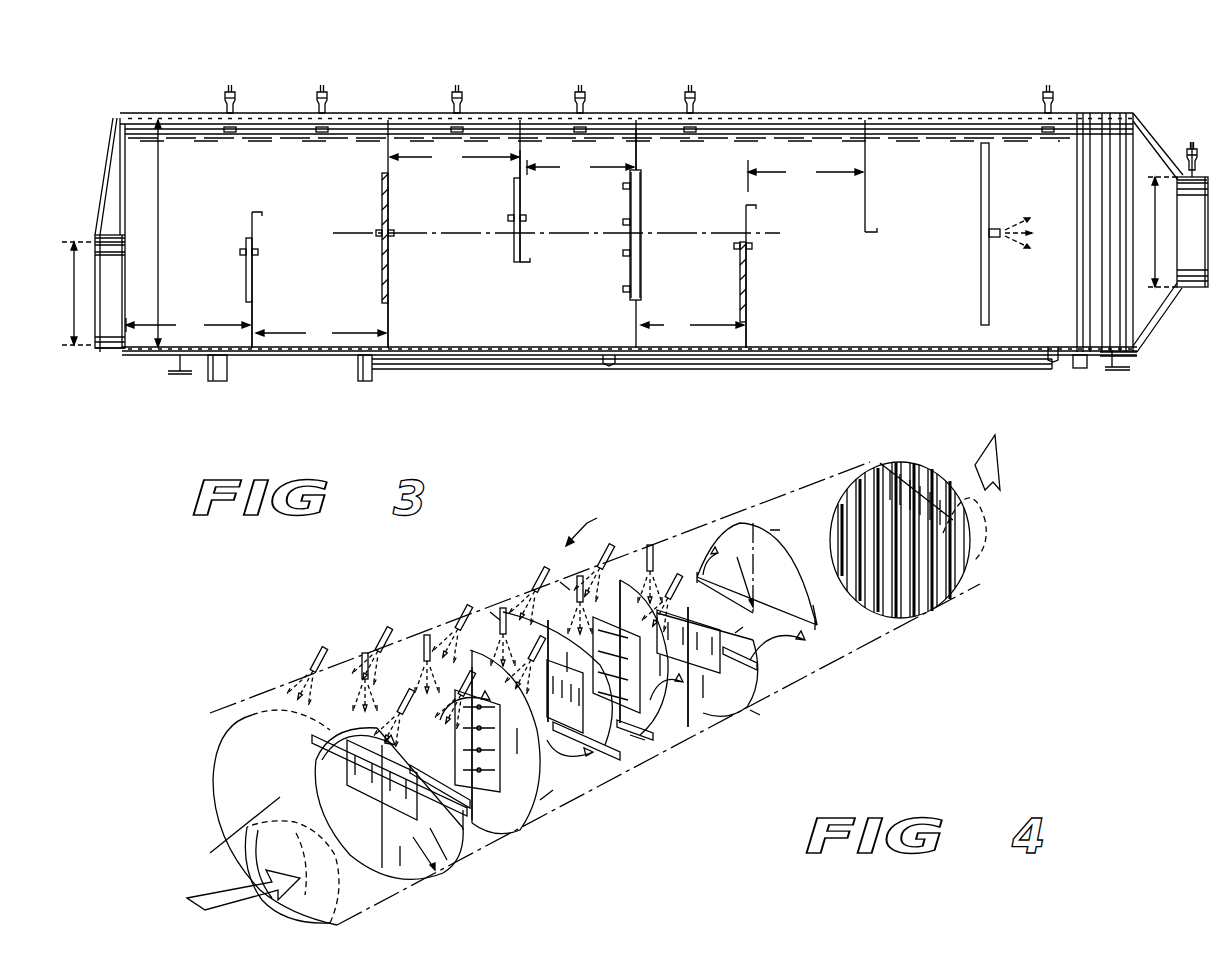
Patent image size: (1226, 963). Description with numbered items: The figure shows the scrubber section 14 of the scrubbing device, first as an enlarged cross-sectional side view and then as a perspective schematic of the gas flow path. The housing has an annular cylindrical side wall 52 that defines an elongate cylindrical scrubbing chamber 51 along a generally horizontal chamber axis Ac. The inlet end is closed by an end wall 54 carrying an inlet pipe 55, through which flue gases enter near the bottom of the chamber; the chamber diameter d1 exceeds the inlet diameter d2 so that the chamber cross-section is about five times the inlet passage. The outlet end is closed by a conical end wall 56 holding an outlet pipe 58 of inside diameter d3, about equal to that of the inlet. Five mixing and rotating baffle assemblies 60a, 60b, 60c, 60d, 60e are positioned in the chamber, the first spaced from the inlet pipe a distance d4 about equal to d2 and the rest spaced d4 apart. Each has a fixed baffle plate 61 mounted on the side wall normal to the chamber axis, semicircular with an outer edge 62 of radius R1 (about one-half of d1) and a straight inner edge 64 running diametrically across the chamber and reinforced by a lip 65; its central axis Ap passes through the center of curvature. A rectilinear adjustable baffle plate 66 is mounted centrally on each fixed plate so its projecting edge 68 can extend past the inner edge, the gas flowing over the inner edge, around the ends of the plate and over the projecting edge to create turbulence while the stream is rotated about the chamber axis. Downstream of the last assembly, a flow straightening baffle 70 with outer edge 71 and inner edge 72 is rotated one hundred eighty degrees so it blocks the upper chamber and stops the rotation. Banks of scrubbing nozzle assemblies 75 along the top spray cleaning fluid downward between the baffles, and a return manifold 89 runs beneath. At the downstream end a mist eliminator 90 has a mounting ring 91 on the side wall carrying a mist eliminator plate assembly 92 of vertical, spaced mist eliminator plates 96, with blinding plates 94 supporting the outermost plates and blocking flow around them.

In FIG. 4, the scrubber section 14 is at (588, 525).
In FIG. 3, the scrubbing chamber 51 is at (182, 148).
In FIG. 4, the scrubbing chamber 51 is at (300, 705).
In FIG. 3, the side wall 52 is at (492, 118).
In FIG. 3, the end wall 54 is at (117, 156).
In FIG. 3, the inlet pipe 55 is at (101, 351).
In FIG. 3, the conical end wall 56 is at (1160, 135).
In FIG. 3, the outlet pipe 58 is at (1195, 288).
In FIG. 3, the baffle assembly 60a is at (253, 212).
In FIG. 4, the baffle assembly 60a is at (408, 867).
In FIG. 3, the baffle assembly 60b is at (382, 183).
In FIG. 4, the baffle assembly 60b is at (498, 825).
In FIG. 3, the baffle assembly 60c is at (518, 262).
In FIG. 4, the baffle assembly 60c is at (542, 615).
In FIG. 3, the baffle assembly 60d is at (630, 273).
In FIG. 4, the baffle assembly 60d is at (617, 582).
In FIG. 3, the baffle assembly 60e is at (740, 224).
In FIG. 4, the baffle assembly 60e is at (727, 716).
In FIG. 3, the fixed baffle plate 61 is at (254, 312).
In FIG. 4, the fixed baffle plate 61 is at (437, 862).
In FIG. 4, the outer edge 62 is at (602, 713).
In FIG. 4, the inner edge 64 is at (437, 812).
In FIG. 4, the lip 65 is at (432, 800).
In FIG. 3, the adjustable baffle plate 66 is at (246, 268).
In FIG. 4, the adjustable baffle plate 66 is at (388, 810).
In FIG. 4, the projecting edge 68 is at (563, 709).
In FIG. 3, the flow straightening baffle 70 is at (868, 195).
In FIG. 4, the flow straightening baffle 70 is at (748, 516).
In FIG. 4, the outer semi-circular edge 71 is at (798, 575).
In FIG. 4, the inner edge 72 is at (760, 605).
In FIG. 3, the scrubbing nozzle assemblies 75 is at (318, 103).
In FIG. 4, the scrubbing nozzle assemblies 75 is at (380, 656).
In FIG. 3, the return manifold 89 is at (462, 370).
In FIG. 3, the mist eliminator 90 is at (1075, 300).
In FIG. 4, the mist eliminator 90 is at (870, 466).
In FIG. 3, the mounting ring 91 is at (1140, 352).
In FIG. 3, the mist eliminator plate assembly 92 is at (1077, 183).
In FIG. 4, the mist eliminator plate assembly 92 is at (942, 471).
In FIG. 4, the blinding plates 94 is at (968, 566).
In FIG. 3, the mist eliminator plates 96 is at (1097, 118).
In FIG. 3, the diameter of scrubbing chamber d1 is at (156, 233).
In FIG. 3, the diameter of inlet pipe d2 is at (77, 293).
In FIG. 3, the inside diameter of outlet pipe d3 is at (1161, 232).
In FIG. 3, the baffle spacing distance d4 is at (494, 246).
In FIG. 3, the chamber axis Ac is at (426, 233).
In FIG. 4, the baffle plate central axis Ap is at (589, 694).
In FIG. 4, the radius of outer edge R1 is at (579, 704).